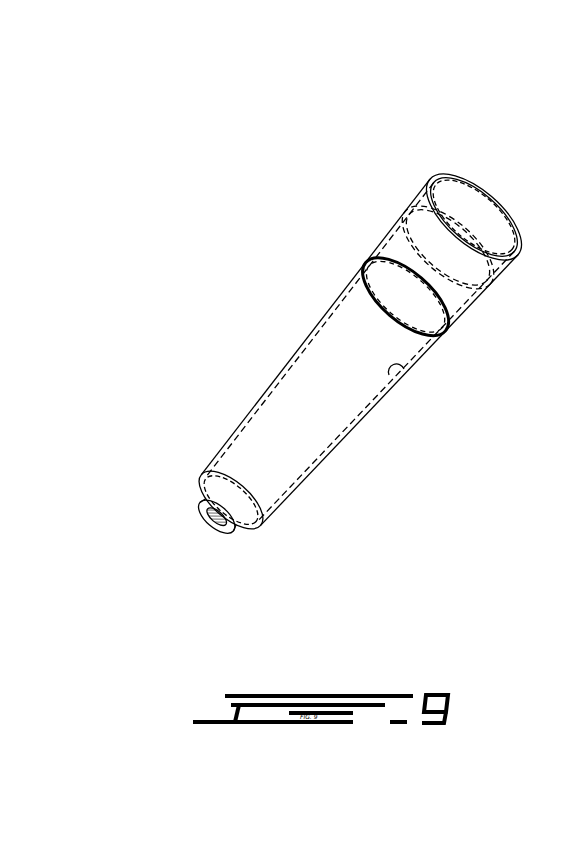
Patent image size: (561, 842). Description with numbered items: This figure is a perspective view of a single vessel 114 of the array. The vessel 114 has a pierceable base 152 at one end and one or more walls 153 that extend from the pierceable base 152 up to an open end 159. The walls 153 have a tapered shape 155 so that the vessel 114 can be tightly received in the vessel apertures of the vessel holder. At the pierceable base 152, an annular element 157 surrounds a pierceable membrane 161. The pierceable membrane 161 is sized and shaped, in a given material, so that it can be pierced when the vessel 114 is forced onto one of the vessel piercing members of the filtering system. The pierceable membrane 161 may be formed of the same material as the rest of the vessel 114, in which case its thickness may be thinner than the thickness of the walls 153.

The vessel 114 is at (300, 348).
The pierceable base 152 is at (217, 535).
The walls 153 is at (357, 384).
The tapered shape 155 is at (397, 378).
The annular element 157 is at (193, 512).
The open end 159 is at (472, 222).
The pierceable membrane 161 is at (194, 522).